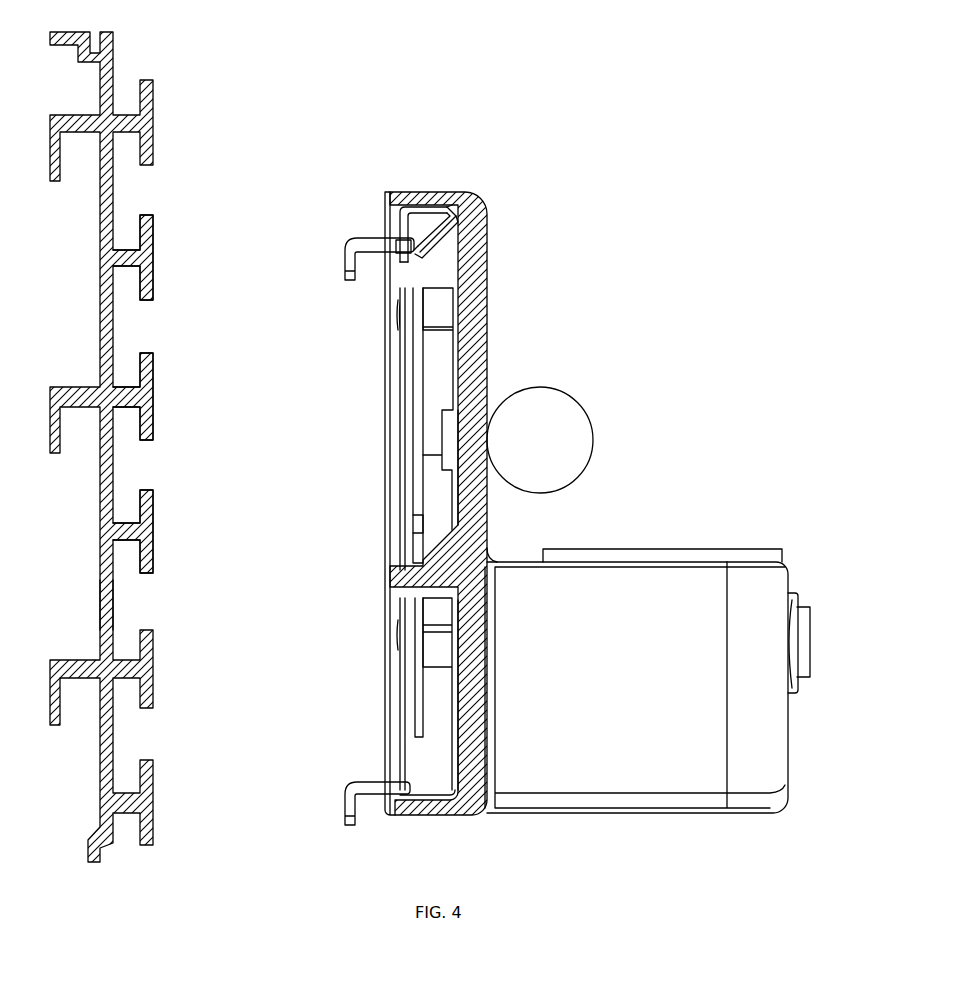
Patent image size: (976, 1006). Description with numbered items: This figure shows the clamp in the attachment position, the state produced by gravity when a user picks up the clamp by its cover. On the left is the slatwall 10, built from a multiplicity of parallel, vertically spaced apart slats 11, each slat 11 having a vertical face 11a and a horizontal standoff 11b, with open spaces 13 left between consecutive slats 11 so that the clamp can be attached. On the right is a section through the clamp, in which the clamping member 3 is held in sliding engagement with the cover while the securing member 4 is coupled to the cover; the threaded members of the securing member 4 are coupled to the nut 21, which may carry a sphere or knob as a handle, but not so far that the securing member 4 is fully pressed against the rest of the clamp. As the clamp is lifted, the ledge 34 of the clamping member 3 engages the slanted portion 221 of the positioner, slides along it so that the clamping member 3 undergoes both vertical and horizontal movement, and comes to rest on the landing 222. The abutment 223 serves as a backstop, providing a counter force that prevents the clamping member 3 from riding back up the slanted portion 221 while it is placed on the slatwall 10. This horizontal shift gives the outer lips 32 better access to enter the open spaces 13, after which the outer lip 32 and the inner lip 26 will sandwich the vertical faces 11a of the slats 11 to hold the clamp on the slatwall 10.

The slatwall 10 is at (113, 50).
The slat 11 is at (148, 257).
The vertical face 11a is at (140, 362).
The horizontal standoff 11b is at (115, 512).
The open space 13 is at (123, 602).
The clamping member 3 is at (418, 490).
The securing member 4 is at (417, 393).
The nut 21 is at (592, 433).
The slanted portion 221 is at (452, 225).
The landing 222 is at (408, 267).
The abutment 223 is at (448, 215).
The inner lip 26 is at (385, 803).
The outer lip 32 is at (343, 257).
The ledge 34 is at (490, 295).